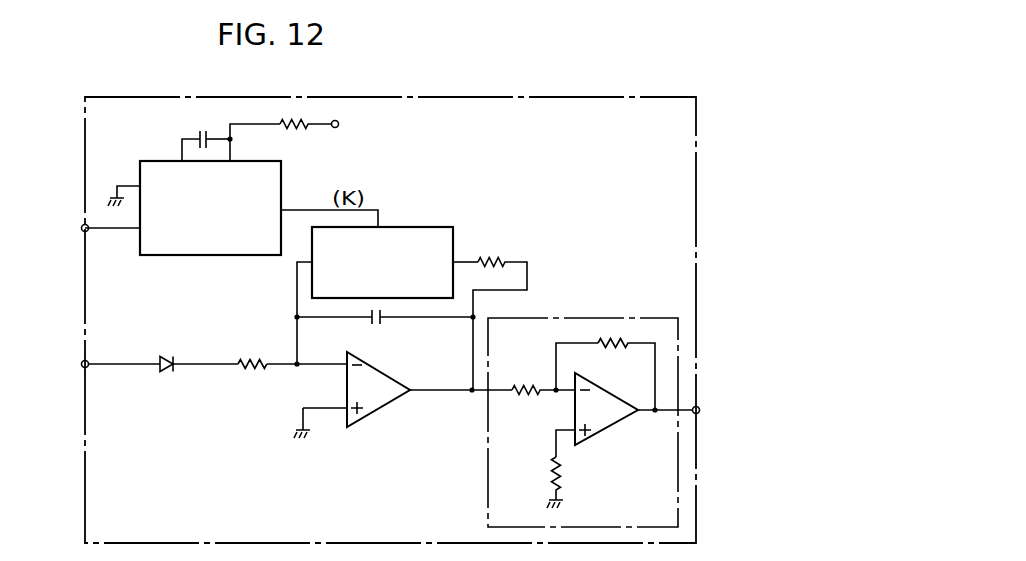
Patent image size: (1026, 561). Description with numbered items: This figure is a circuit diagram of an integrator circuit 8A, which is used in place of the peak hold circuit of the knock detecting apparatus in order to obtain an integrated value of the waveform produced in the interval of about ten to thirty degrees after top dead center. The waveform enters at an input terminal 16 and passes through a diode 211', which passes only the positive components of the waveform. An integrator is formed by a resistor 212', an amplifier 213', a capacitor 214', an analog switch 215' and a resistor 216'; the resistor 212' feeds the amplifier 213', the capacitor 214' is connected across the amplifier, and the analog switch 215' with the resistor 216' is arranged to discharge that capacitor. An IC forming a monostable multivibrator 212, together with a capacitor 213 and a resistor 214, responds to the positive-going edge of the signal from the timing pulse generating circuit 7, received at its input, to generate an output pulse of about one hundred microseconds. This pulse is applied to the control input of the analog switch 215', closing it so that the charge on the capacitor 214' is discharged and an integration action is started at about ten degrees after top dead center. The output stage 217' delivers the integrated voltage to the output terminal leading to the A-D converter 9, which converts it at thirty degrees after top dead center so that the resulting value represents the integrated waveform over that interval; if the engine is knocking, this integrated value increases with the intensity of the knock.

The integrator circuit 8A is at (590, 97).
The timing pulse generating circuit 7 is at (73, 228).
The input terminal 16 is at (73, 364).
The A-D converter 9 is at (708, 410).
The IC forming a monostable multivibrator 212 is at (231, 208).
The capacitor 213 is at (184, 130).
The resistor 214 is at (296, 131).
The diode 211' is at (155, 350).
The resistor 212' is at (247, 348).
The amplifier 213' is at (403, 397).
The capacitor 214' is at (385, 333).
The analog switch 215' is at (382, 246).
The resistor 216' is at (495, 311).
The amplifier circuit 217' is at (590, 404).